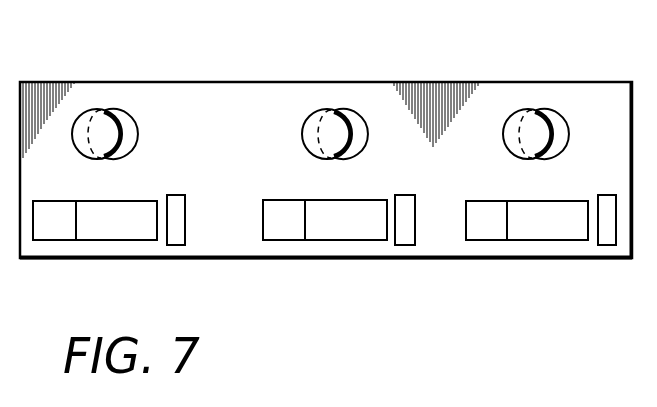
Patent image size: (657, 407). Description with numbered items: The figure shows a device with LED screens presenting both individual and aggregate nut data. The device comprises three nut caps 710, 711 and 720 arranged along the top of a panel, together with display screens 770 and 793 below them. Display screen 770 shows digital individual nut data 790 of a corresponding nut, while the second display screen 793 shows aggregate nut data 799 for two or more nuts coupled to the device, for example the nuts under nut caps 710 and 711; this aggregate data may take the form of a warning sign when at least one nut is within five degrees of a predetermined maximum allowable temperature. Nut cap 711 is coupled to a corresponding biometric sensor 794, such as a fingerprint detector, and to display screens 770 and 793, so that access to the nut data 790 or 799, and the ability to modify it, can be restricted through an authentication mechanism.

The nut cap 710 is at (88, 108).
The nut cap 711 is at (318, 108).
The nut cap 720 is at (517, 108).
The display screen 770 is at (263, 223).
The individual nut data 790 is at (291, 235).
The second display screen 793 is at (338, 240).
The aggregate nut data 799 is at (370, 231).
The biometric sensor 794 is at (417, 223).